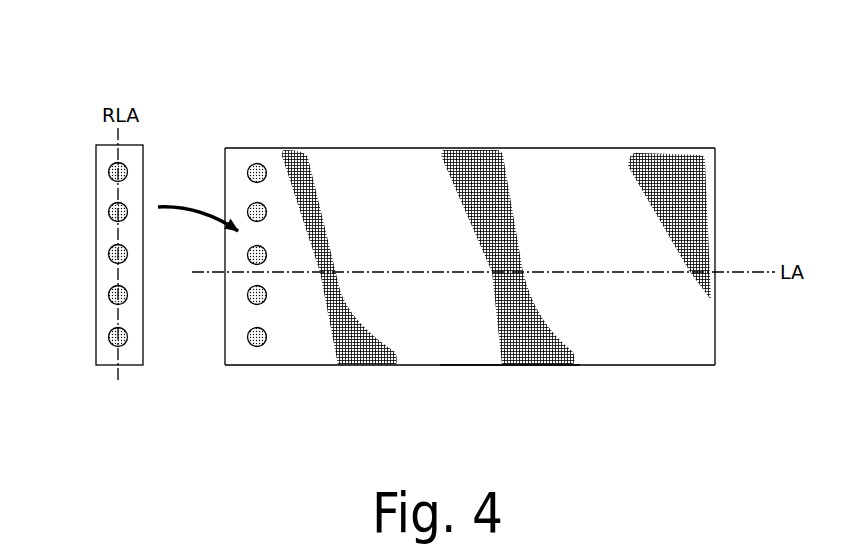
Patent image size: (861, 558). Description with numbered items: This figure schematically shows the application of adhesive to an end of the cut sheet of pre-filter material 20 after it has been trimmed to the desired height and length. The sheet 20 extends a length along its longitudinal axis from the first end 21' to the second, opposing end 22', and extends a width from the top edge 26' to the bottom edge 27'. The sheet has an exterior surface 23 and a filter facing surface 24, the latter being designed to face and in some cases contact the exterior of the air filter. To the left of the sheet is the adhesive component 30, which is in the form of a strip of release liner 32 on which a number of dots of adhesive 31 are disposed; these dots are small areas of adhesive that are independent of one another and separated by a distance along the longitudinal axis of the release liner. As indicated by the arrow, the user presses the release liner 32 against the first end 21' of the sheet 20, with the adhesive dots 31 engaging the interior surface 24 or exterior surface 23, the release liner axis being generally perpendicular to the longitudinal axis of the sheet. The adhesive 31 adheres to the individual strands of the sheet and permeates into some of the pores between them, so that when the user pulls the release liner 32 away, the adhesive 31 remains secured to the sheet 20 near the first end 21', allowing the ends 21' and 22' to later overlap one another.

The sheet of pre-filter material 20 is at (376, 109).
The first end of the cut sheet 21' is at (197, 289).
The second end of the cut sheet 22' is at (750, 272).
The exterior surface 23 is at (617, 193).
The filter facing surface 24 is at (353, 347).
The top edge of the cut sheet 26' is at (508, 226).
The bottom edge of the cut sheet 27' is at (510, 408).
The adhesive component 30 is at (143, 146).
The adhesive 31 is at (109, 253).
The release liner 32 is at (110, 307).